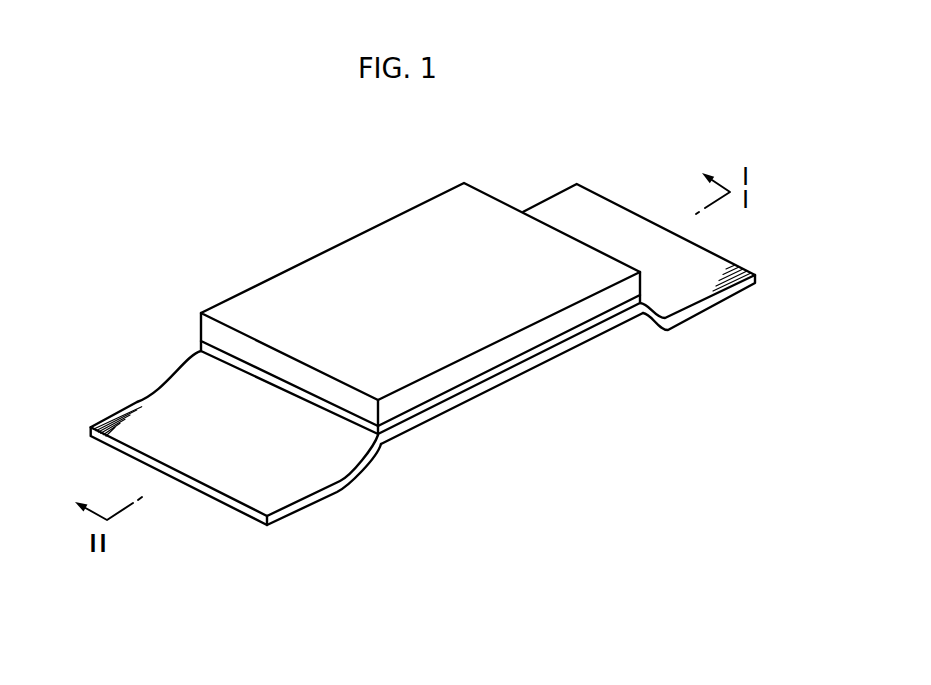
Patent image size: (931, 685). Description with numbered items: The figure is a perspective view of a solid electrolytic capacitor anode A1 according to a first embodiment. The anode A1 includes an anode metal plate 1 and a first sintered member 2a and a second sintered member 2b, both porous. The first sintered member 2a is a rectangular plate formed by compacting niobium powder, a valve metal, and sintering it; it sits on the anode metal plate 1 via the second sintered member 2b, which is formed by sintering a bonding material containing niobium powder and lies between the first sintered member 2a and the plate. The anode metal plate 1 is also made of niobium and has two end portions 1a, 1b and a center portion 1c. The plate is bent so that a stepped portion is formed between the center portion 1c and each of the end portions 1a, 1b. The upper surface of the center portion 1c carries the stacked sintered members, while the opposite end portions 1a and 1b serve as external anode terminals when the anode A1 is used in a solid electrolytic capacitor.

The anode A1 is at (222, 223).
The anode metal plate 1 is at (577, 345).
The end portion 1a is at (297, 482).
The end portion 1b is at (695, 295).
The center portion 1c is at (500, 383).
The first sintered member 2a is at (344, 262).
The second sintered member 2b is at (442, 403).